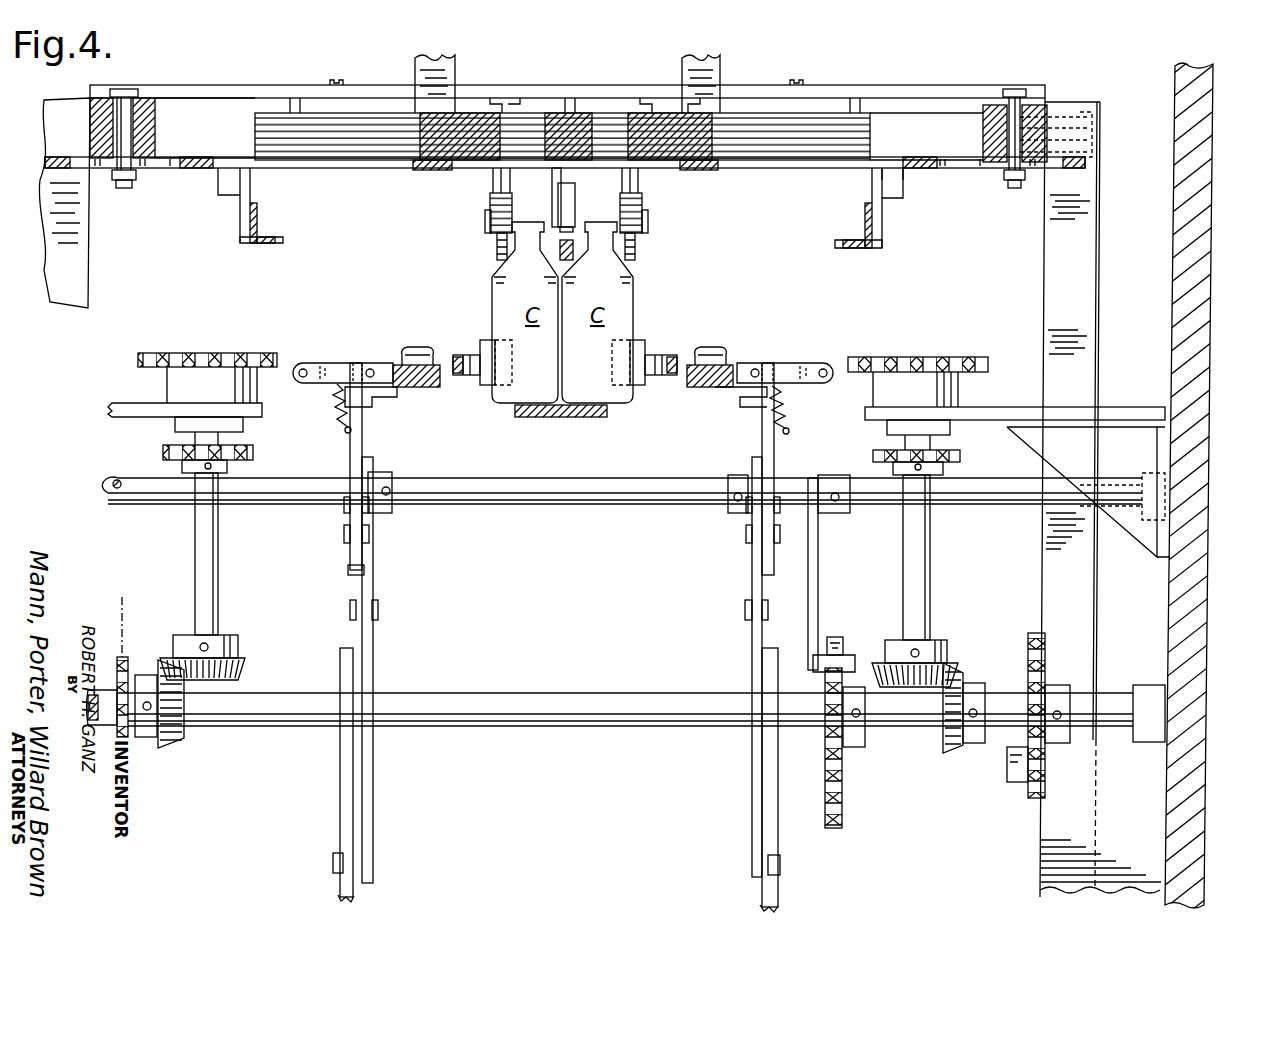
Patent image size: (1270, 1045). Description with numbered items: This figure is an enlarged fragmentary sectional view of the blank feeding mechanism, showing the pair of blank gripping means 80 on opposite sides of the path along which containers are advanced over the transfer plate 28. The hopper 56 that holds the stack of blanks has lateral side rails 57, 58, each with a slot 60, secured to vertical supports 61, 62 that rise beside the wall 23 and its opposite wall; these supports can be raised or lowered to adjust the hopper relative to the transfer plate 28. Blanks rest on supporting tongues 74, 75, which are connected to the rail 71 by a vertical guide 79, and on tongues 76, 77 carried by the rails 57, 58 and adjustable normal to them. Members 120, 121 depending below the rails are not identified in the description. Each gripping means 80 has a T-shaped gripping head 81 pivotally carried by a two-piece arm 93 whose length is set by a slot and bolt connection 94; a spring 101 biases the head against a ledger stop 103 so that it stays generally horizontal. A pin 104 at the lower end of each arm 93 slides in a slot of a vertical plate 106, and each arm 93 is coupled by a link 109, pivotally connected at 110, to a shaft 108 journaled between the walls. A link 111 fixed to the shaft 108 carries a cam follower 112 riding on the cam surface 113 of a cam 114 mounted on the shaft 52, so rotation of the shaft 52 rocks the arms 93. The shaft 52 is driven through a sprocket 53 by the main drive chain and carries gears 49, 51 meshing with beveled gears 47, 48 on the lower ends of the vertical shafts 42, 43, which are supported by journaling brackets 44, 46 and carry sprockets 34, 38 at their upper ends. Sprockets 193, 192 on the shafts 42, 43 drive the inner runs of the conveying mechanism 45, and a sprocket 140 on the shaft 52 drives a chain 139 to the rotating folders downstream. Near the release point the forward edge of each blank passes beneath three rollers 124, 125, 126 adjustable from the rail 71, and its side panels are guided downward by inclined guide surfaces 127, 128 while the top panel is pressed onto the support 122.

The wall 23 is at (1205, 290).
The transfer plate 28 is at (570, 418).
The sprocket 34 is at (252, 338).
The sprocket 38 is at (988, 335).
The shaft 42 is at (218, 590).
The shaft 43 is at (930, 580).
The journaling bracket 44 is at (118, 402).
The conveying mechanism 45 is at (676, 349).
The journaling bracket 46 is at (1088, 492).
The beveled gear 47 is at (245, 662).
The beveled gear 48 is at (950, 648).
The gear 49 is at (175, 745).
The gear 51 is at (950, 752).
The shaft 52 is at (590, 728).
The sprocket 53 is at (1045, 655).
The hopper 56 is at (945, 80).
The side rail 57 is at (150, 148).
The side rail 58 is at (990, 140).
The slot 60 is at (118, 118).
The vertical support 61 is at (80, 255).
The vertical support 62 is at (1090, 278).
The rail 71 is at (550, 102).
The supporting tongue 74 is at (415, 172).
The supporting tongue 75 is at (700, 172).
The tongue 76 is at (237, 157).
The tongue 77 is at (900, 172).
The vertical guide 79 is at (445, 72).
The blank gripping means 80 is at (360, 356).
The gripping head 81 is at (438, 388).
The arm 93 is at (350, 578).
The slot and bolt connection 94 is at (344, 535).
The spring 101 is at (330, 403).
The ledger stop 103 is at (385, 400).
The pin 104 is at (333, 858).
The vertical plate 106 is at (353, 900).
The shaft 108 is at (548, 506).
The link 109 is at (373, 590).
The pivotal connection 110 is at (378, 610).
The link 111 is at (820, 590).
The cam follower 112 is at (845, 655).
The cam surface 113 is at (842, 820).
The cam 114 is at (852, 748).
The bracket 120 is at (262, 250).
The bracket 121 is at (866, 250).
The support 122 is at (560, 265).
The roller 124 is at (490, 206).
The roller 125 is at (562, 205).
The roller 126 is at (640, 210).
The inclined guide surface 127 is at (497, 248).
The inclined guide surface 128 is at (635, 248).
The drive chain 139 is at (120, 596).
The sprocket 140 is at (115, 680).
The sprocket 192 is at (985, 450).
The sprocket 193 is at (163, 452).